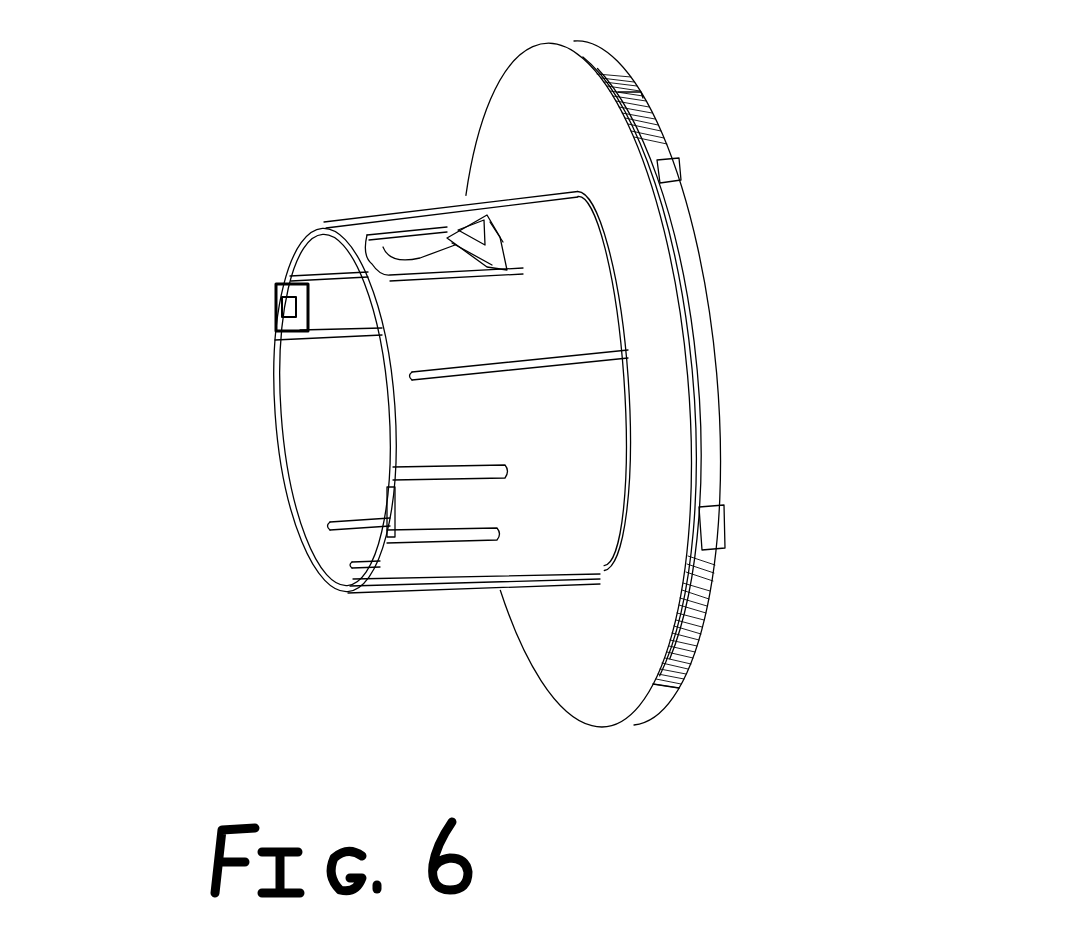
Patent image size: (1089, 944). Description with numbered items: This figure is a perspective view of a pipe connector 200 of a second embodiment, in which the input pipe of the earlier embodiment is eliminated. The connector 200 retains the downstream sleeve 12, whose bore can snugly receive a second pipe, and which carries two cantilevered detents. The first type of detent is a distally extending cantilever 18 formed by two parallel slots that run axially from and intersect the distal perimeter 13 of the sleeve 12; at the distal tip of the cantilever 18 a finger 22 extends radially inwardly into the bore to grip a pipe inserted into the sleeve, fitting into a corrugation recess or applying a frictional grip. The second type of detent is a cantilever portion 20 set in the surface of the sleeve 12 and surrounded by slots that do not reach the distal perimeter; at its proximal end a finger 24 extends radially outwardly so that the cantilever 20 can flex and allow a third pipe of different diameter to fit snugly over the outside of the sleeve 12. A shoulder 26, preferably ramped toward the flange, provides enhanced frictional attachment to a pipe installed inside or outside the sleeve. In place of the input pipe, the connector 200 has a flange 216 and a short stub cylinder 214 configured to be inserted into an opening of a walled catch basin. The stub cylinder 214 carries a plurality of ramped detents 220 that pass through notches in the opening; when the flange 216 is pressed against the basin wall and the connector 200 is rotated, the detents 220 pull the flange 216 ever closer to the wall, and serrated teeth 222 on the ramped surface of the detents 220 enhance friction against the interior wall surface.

The sleeve 12 is at (580, 538).
The distal perimeter 13 is at (283, 465).
The cantilever 18 is at (350, 307).
The cantilever portion 20 is at (422, 255).
The finger 22 is at (303, 330).
The finger 24 is at (493, 265).
The shoulder 26 is at (553, 363).
The connector 200 is at (884, 122).
The stub cylinder 214 is at (697, 298).
The flange 216 is at (575, 117).
The ramped detent 220 is at (652, 128).
The serrated teeth 222 is at (695, 595).